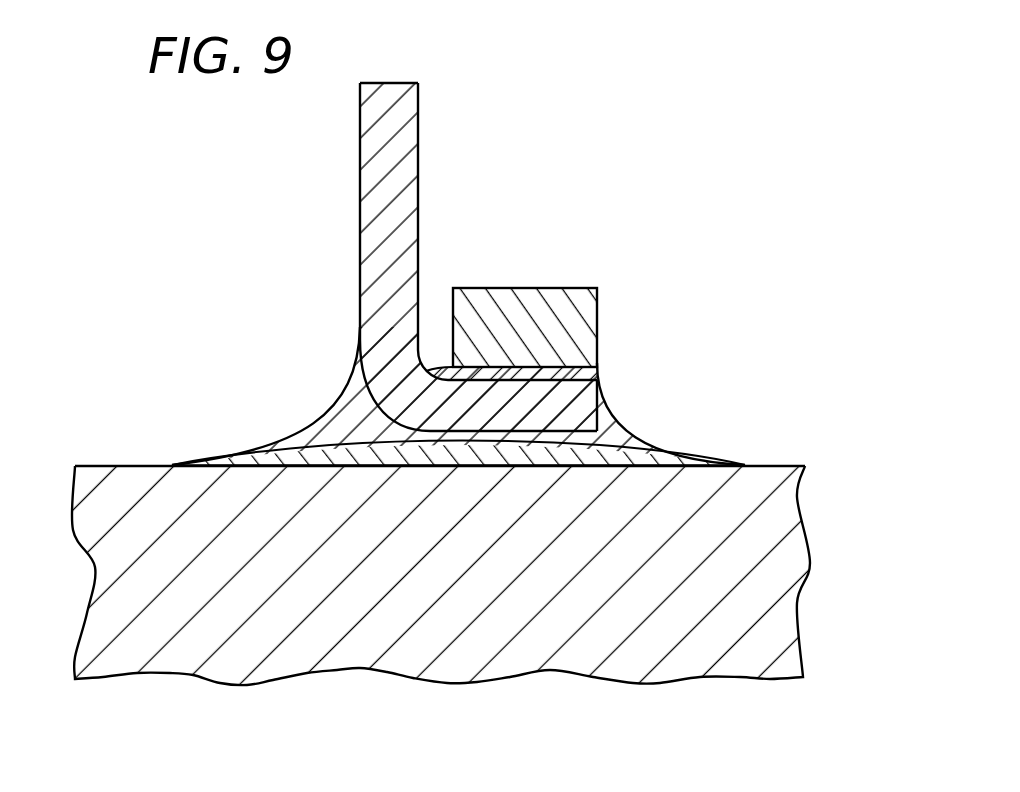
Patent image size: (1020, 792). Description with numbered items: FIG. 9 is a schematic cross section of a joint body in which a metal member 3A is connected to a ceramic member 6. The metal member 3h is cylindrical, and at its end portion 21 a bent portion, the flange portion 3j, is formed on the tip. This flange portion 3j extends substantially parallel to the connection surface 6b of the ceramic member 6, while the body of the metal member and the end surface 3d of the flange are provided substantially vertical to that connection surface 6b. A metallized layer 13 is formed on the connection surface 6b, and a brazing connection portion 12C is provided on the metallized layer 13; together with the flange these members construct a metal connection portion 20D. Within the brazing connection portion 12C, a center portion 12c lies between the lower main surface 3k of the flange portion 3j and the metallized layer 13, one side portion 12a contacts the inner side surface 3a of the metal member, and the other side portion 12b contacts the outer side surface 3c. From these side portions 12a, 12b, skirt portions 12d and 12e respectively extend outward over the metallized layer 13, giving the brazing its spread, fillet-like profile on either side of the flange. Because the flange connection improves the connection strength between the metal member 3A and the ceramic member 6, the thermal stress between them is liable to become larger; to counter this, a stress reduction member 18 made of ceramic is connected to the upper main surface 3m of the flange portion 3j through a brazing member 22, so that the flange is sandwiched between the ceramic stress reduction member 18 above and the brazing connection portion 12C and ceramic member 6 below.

The metal member 3A is at (432, 128).
The inner side surface 3a is at (360, 238).
The outer side surface 3c is at (418, 193).
The metal member 3h is at (372, 177).
The end surface 3d is at (600, 368).
The flange portion 3j is at (490, 415).
The main surface 3k is at (467, 443).
The upper main surface 3m is at (493, 373).
The ceramic member 6 is at (793, 562).
The connection surface 6b is at (137, 462).
The one side portion 12a is at (350, 390).
The other side portion 12b is at (607, 410).
The brazing connection portion 12C is at (650, 428).
The center portion 12c is at (547, 443).
The skirt portion 12d is at (317, 433).
The skirt portion 12e is at (620, 438).
The metallized layer 13 is at (340, 458).
The stress reduction member 18 is at (557, 280).
The metal connection portion 20D is at (702, 430).
The end portion 21 is at (586, 445).
The brazing member 22 is at (436, 364).